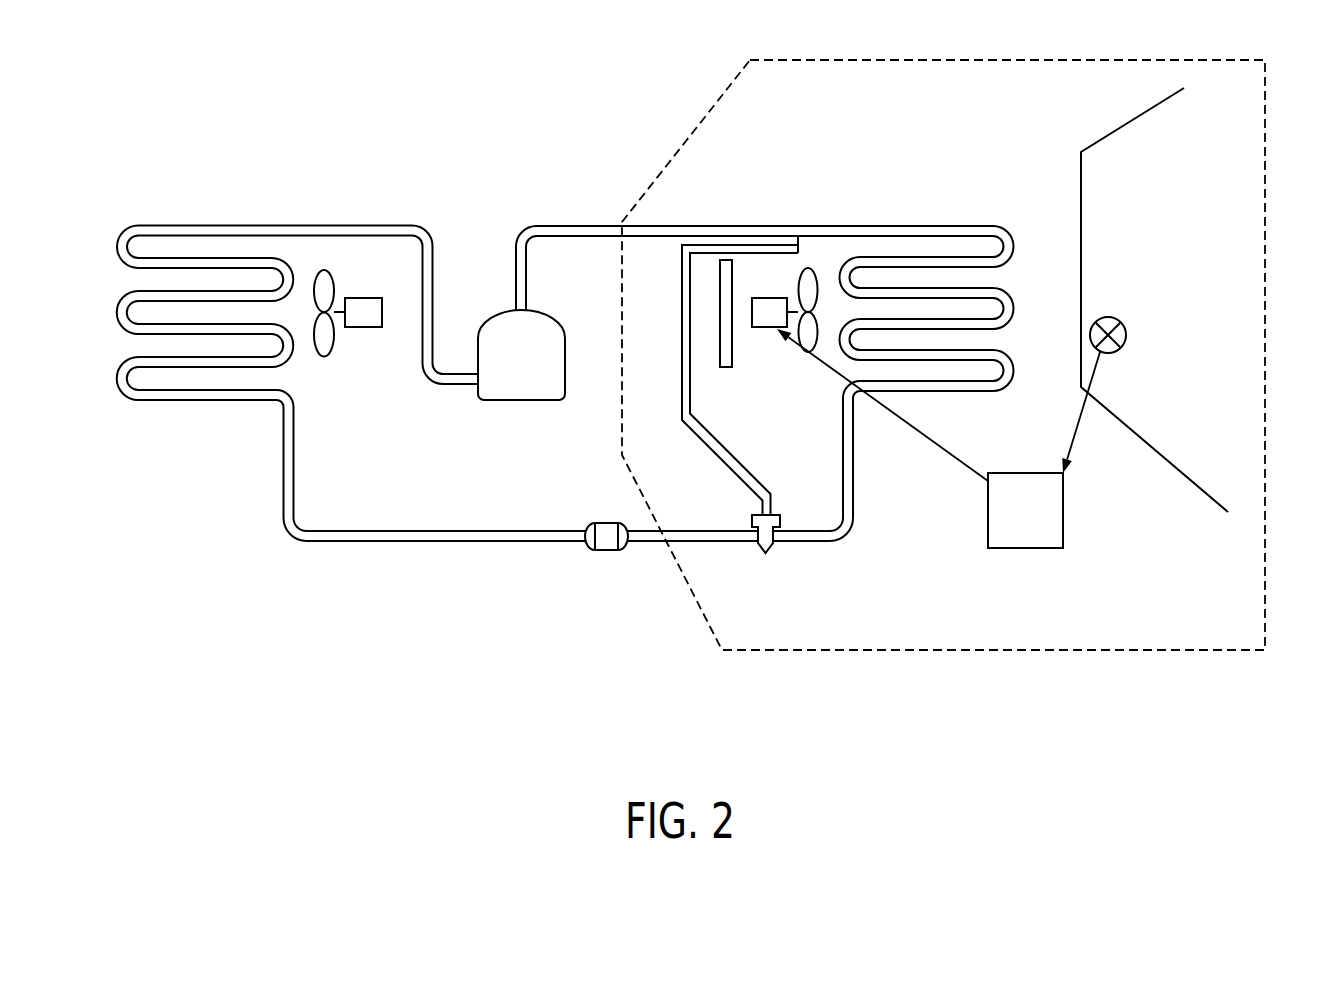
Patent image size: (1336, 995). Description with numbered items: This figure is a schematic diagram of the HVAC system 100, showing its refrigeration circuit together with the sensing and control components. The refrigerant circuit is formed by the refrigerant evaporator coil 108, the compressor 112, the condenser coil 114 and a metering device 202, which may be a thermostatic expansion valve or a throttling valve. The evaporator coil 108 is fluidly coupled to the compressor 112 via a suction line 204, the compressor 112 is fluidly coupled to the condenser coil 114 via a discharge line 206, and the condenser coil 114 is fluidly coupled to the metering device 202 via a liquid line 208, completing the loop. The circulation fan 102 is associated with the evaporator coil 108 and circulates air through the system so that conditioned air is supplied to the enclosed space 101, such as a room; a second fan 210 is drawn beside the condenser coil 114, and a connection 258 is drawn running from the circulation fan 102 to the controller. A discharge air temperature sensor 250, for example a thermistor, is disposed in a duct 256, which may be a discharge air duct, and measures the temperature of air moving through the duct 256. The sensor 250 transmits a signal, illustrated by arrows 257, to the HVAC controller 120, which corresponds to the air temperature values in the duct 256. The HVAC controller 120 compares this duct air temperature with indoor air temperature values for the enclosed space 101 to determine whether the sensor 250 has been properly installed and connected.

The HVAC system 100 is at (126, 156).
The enclosed space 101 is at (1268, 348).
The circulation fan 102 is at (768, 328).
The refrigerant evaporator coil 108 is at (1010, 385).
The compressor 112 is at (520, 402).
The condenser coil 114 is at (191, 401).
The HVAC controller 120 is at (1063, 510).
The metering device 202 is at (766, 553).
The suction line 204 is at (592, 238).
The discharge line 206 is at (432, 238).
The liquid line 208 is at (362, 543).
The fan 210 is at (370, 327).
The discharge air temperature (DAT) sensor 250 is at (1130, 338).
The duct 256 is at (1105, 138).
The arrows 257 is at (1095, 368).
The fan connection 258 is at (953, 461).